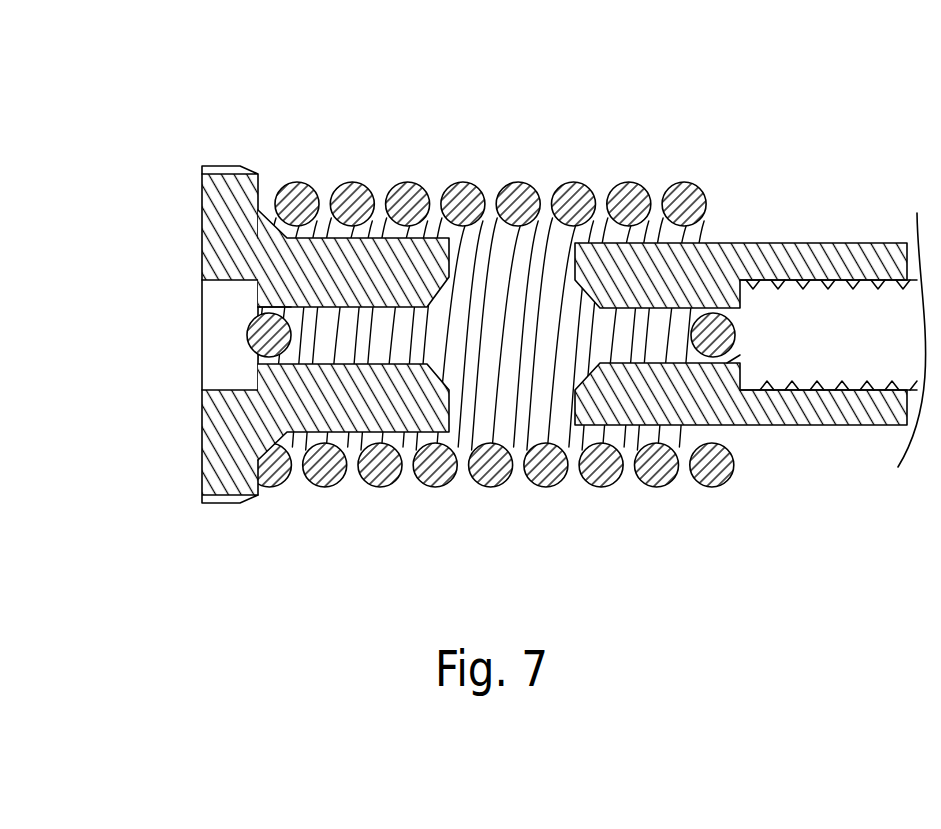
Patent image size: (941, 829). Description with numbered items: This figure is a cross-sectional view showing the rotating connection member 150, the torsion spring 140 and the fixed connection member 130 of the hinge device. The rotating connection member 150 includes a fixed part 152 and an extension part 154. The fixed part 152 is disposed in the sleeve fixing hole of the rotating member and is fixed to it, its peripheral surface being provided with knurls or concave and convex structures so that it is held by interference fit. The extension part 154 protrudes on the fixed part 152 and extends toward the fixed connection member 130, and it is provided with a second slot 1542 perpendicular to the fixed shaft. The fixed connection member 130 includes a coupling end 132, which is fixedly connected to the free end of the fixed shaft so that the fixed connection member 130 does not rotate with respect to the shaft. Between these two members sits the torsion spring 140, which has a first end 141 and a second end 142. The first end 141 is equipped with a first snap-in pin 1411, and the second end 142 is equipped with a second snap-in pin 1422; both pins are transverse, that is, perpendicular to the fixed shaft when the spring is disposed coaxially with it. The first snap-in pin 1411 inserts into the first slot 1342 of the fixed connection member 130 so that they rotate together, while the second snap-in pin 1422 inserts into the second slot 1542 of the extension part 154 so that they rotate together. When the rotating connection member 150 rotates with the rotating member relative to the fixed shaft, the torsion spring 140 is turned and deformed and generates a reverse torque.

The fixed connection member 130 is at (731, 331).
The coupling end 132 is at (584, 426).
The second end 142 is at (735, 176).
The first slot 1342 is at (737, 304).
The second snap-in pin 1422 is at (717, 338).
The rotating connection member 150 is at (281, 320).
The fixed part 152 is at (202, 195).
The extension part 154 is at (490, 302).
The second slot 1542 is at (247, 303).
The first end 141 is at (256, 508).
The first snap-in pin 1411 is at (262, 341).
The torsion spring 140 is at (527, 183).